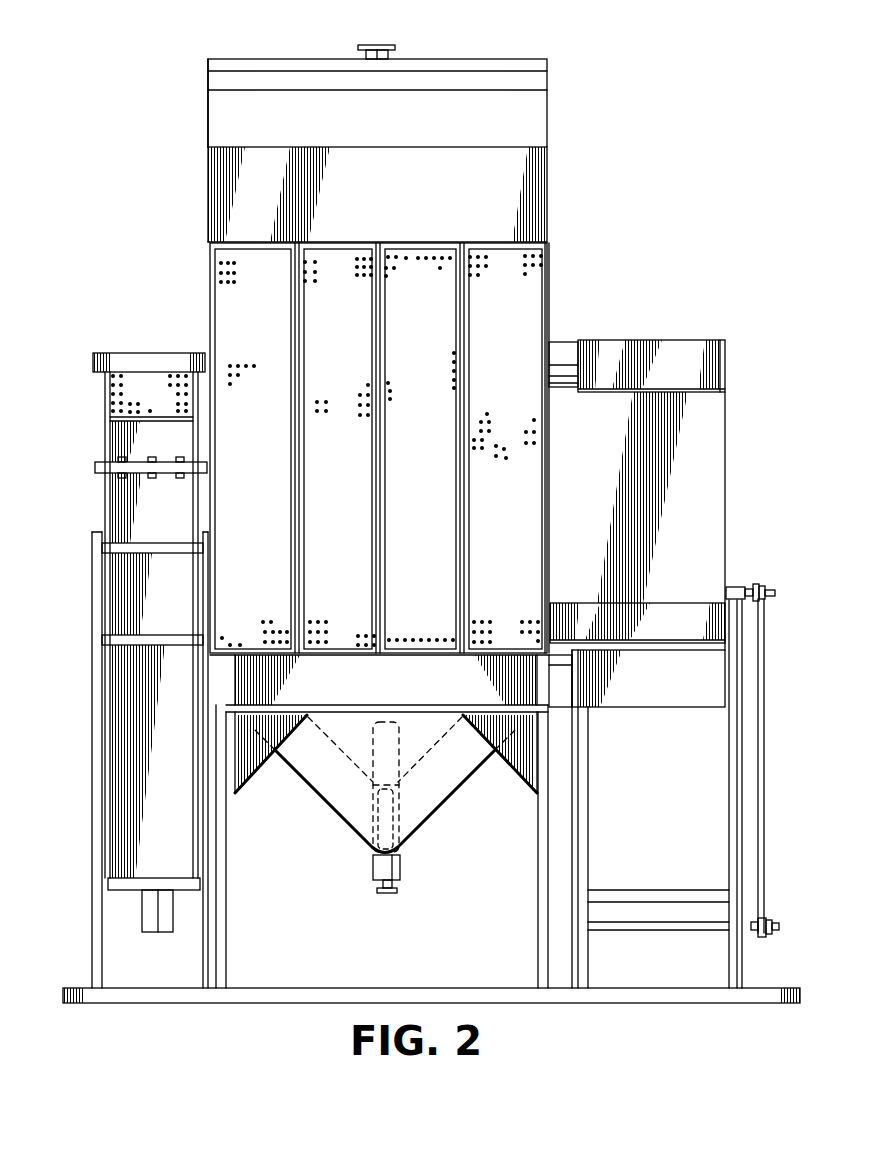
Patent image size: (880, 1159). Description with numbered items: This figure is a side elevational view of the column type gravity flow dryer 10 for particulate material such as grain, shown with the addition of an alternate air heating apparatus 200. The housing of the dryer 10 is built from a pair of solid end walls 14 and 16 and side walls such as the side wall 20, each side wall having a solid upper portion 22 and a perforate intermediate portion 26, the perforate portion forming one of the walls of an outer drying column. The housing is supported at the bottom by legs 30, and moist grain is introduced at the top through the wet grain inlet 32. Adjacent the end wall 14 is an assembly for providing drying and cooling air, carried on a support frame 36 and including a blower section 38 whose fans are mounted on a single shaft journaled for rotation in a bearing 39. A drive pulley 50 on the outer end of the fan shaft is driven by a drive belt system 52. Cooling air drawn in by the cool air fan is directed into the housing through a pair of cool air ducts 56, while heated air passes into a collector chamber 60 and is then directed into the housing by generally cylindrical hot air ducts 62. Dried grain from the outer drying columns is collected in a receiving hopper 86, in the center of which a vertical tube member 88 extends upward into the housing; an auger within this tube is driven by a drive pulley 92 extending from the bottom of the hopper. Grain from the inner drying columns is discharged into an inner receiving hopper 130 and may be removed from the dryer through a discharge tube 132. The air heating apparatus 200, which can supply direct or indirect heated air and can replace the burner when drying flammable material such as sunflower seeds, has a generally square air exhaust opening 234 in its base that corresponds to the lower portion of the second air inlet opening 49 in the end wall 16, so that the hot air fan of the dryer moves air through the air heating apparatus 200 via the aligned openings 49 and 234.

The dryer 10 is at (481, 50).
The end wall 14 is at (547, 101).
The end wall 16 is at (208, 112).
The side wall 20 is at (520, 305).
The upper portion 22 is at (537, 190).
The perforate intermediate portion 26 is at (532, 283).
The legs 30 is at (236, 828).
The wet grain inlet 32 is at (378, 45).
The support frame 36 is at (738, 690).
The blower section 38 is at (727, 535).
The bearing 39 is at (735, 588).
The second air inlet opening 49 is at (222, 600).
The drive pulley 50 is at (766, 584).
The drive belt system 52 is at (770, 745).
The cool air ducts 56 is at (672, 632).
The collector chamber 60 is at (727, 370).
The hot air ducts 62 is at (562, 355).
The receiving hopper 86 is at (440, 802).
The tube member 88 is at (380, 862).
The drive pulley 92 is at (392, 888).
The inner receiving hopper 130 is at (307, 785).
The discharge tube 132 is at (398, 832).
The air heating apparatus 200 is at (95, 434).
The air exhaust opening 234 is at (197, 587).